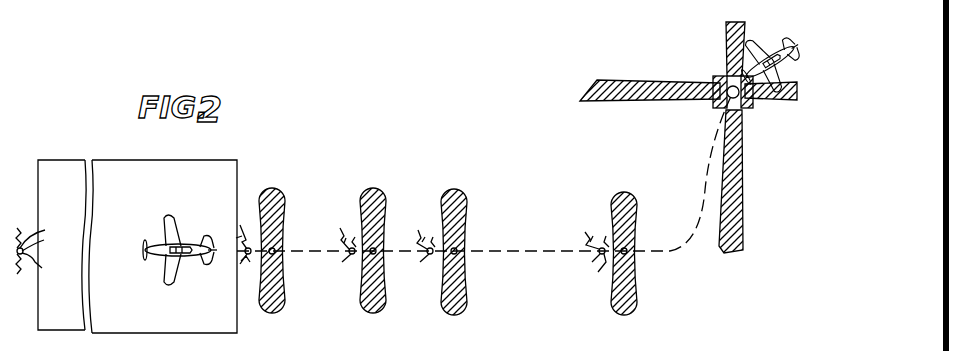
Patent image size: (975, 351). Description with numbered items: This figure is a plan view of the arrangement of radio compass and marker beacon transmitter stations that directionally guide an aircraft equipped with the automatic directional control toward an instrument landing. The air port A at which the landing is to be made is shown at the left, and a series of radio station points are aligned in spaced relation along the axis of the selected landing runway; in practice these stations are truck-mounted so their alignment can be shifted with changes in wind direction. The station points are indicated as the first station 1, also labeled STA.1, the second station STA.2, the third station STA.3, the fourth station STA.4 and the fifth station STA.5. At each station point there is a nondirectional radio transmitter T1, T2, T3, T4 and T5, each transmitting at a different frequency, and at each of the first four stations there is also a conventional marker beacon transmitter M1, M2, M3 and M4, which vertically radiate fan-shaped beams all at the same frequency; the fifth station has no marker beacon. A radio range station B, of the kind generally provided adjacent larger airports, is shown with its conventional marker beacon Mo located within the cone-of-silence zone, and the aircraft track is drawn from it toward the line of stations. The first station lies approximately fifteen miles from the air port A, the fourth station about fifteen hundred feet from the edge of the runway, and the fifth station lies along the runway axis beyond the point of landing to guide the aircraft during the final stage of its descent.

The air port A is at (220, 168).
The station 1 is at (185, 243).
The nondirectional radio transmitter T5 is at (37, 246).
The station 5 STA.5 is at (46, 271).
The nondirectional radio transmitter T4 is at (250, 248).
The station 4 STA.4 is at (252, 273).
The marker beacon transmitter M4 is at (278, 250).
The nondirectional radio transmitter T3 is at (356, 249).
The station 3 STA.3 is at (344, 264).
The marker beacon transmitter M3 is at (379, 250).
The nondirectional radio transmitter T2 is at (434, 249).
The station 2 STA.2 is at (422, 264).
The marker beacon transmitter M2 is at (462, 250).
The nondirectional radio transmitter T1 is at (606, 249).
The station 1 STA.1 is at (592, 270).
The marker beacon transmitter M1 is at (632, 250).
The radio range station B is at (716, 78).
The marker beacon Mo is at (744, 105).